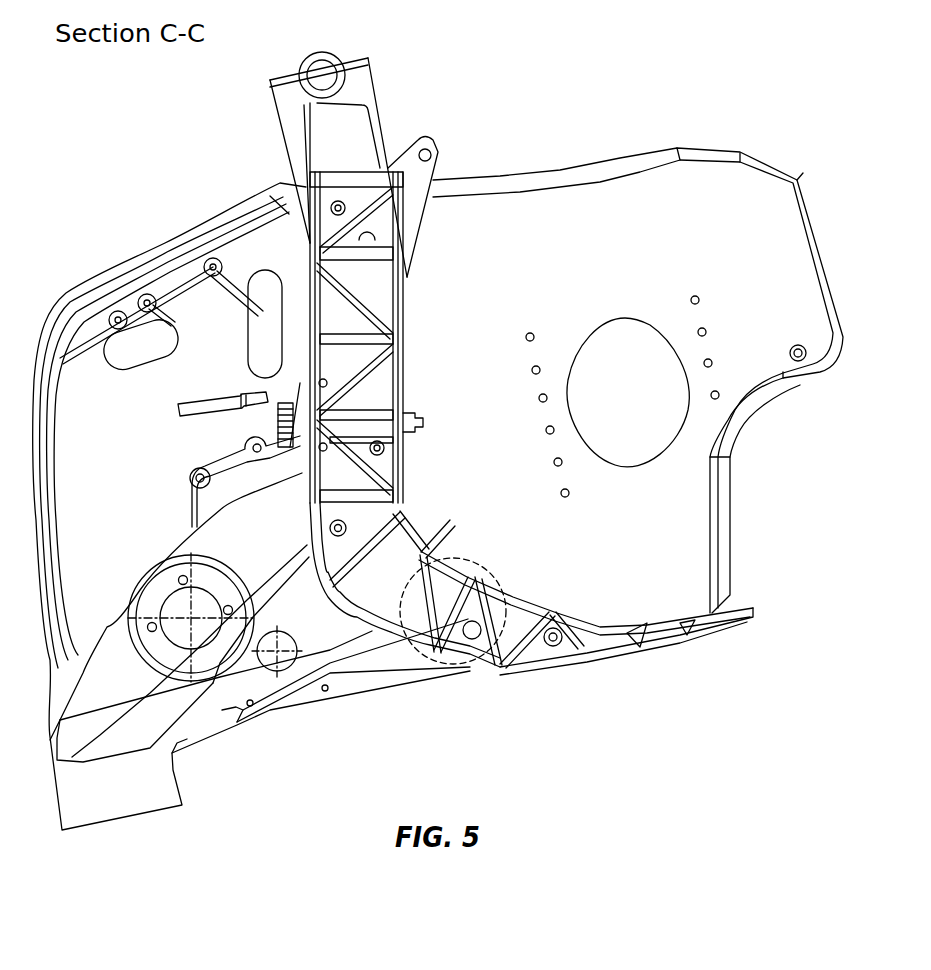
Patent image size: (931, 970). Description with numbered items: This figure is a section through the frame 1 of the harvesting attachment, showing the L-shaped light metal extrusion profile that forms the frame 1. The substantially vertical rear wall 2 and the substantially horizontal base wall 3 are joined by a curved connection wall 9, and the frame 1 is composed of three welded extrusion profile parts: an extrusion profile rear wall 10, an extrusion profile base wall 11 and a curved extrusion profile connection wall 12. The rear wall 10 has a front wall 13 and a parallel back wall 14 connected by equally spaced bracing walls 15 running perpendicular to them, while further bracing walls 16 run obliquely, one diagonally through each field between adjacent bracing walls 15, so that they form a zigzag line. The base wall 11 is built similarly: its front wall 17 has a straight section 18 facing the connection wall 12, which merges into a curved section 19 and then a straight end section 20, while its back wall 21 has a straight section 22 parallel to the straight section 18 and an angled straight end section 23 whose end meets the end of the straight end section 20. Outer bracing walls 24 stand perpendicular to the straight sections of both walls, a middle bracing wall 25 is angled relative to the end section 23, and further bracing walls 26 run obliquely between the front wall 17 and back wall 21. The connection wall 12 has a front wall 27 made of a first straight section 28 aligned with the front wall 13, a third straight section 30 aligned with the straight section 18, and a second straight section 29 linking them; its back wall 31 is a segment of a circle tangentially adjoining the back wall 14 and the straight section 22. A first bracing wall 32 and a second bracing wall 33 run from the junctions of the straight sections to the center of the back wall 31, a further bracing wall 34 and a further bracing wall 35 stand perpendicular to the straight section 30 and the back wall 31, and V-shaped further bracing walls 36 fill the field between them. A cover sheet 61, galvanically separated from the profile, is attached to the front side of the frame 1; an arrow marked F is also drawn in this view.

The frame 1 is at (213, 139).
The rear wall 2 is at (470, 285).
The base wall 3 is at (600, 740).
The connection wall 9 is at (497, 477).
The extrusion profile rear wall 10 is at (378, 290).
The extrusion profile base wall 11 is at (503, 668).
The extrusion profile connection wall 12 is at (362, 608).
The front wall 13 is at (403, 366).
The back wall 14 is at (304, 298).
The bracing walls 15 is at (357, 175).
The further bracing walls 16 is at (380, 222).
The front wall 17 is at (563, 600).
The straight section 18 is at (525, 592).
The curved section 19 is at (612, 617).
The straight end section 20 is at (700, 613).
The back wall 21 is at (478, 670).
The straight section 22 is at (462, 668).
The straight end section 23 is at (657, 643).
The outer bracing walls 24 is at (440, 663).
The middle bracing wall 25 is at (553, 660).
The further bracing walls 26 is at (533, 663).
The front wall 27 is at (420, 520).
The first straight section 28 is at (424, 500).
The second straight section 29 is at (462, 534).
The third straight section 30 is at (444, 556).
The back wall 31 is at (310, 625).
The first bracing wall 32 is at (305, 518).
The second bracing wall 33 is at (300, 492).
The further bracing wall 34 is at (300, 468).
The further bracing wall 35 is at (478, 562).
The further bracing walls 36 is at (420, 640).
The cover sheet 61 is at (585, 610).
The force direction F is at (492, 569).